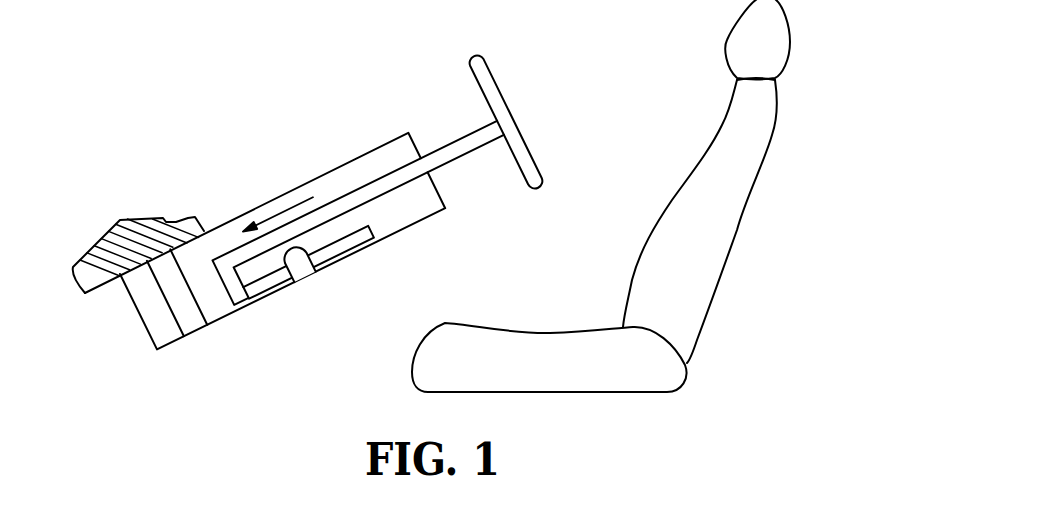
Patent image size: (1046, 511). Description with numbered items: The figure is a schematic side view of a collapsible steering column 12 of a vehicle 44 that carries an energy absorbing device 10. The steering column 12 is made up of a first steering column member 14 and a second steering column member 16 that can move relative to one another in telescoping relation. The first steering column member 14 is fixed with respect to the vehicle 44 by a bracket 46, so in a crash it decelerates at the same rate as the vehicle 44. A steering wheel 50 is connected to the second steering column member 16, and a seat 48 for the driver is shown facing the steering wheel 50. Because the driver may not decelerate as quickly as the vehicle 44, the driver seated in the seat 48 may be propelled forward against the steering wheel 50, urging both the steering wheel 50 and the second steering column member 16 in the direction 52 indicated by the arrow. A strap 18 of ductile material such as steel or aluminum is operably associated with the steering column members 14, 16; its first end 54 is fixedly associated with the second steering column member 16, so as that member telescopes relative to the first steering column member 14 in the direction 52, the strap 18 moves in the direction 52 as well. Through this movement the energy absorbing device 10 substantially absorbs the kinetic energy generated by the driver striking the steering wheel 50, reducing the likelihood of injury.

The energy absorbing device 10 is at (213, 150).
The collapsible steering column 12 is at (123, 362).
The first steering column member 14 is at (217, 315).
The second steering column member 16 is at (388, 178).
The strap 18 is at (370, 239).
The vehicle 44 is at (86, 246).
The bracket 46 is at (196, 328).
The seat 48 is at (593, 377).
The steering wheel 50 is at (497, 83).
The direction 52 is at (292, 207).
The first end 54 is at (248, 288).